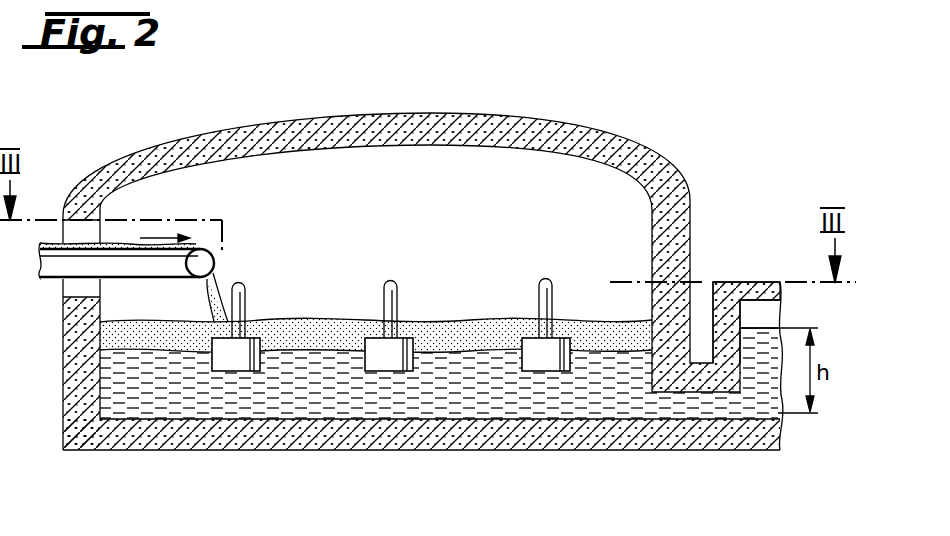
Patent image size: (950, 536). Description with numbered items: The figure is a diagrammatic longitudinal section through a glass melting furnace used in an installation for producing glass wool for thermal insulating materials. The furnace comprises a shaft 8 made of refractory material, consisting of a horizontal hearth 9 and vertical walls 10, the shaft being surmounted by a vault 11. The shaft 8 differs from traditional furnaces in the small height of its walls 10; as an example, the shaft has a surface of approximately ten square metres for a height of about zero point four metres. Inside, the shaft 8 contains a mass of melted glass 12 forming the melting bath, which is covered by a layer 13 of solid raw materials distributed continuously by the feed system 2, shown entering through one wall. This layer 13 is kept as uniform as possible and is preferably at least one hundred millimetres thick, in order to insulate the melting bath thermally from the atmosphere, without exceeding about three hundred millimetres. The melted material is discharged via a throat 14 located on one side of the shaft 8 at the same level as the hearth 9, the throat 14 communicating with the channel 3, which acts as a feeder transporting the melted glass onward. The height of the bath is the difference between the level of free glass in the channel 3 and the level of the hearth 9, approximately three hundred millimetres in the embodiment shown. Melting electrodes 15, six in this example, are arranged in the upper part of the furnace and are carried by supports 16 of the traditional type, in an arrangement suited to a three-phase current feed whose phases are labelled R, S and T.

The feed system 2 is at (58, 290).
The channel 3 is at (743, 286).
The shaft 8 is at (238, 460).
The hearth 9 is at (487, 442).
The vertical walls 10 is at (68, 393).
The vault 11 is at (440, 120).
The melted glass 12 is at (156, 416).
The layer of solid raw materials 13 is at (455, 330).
The throat 14 is at (697, 408).
The melting electrodes 15 is at (245, 365).
The supports 16 is at (245, 292).